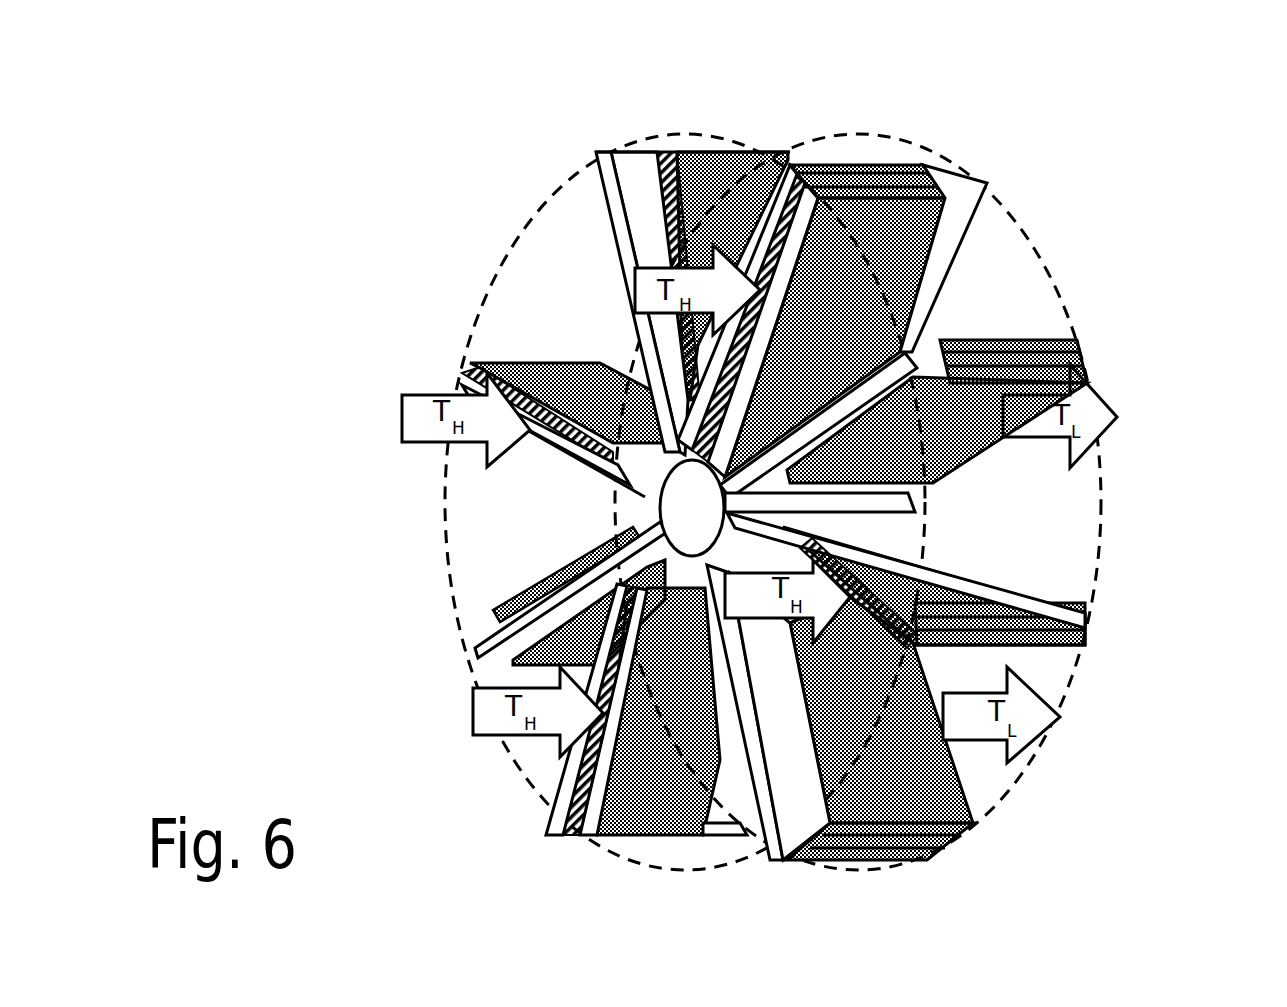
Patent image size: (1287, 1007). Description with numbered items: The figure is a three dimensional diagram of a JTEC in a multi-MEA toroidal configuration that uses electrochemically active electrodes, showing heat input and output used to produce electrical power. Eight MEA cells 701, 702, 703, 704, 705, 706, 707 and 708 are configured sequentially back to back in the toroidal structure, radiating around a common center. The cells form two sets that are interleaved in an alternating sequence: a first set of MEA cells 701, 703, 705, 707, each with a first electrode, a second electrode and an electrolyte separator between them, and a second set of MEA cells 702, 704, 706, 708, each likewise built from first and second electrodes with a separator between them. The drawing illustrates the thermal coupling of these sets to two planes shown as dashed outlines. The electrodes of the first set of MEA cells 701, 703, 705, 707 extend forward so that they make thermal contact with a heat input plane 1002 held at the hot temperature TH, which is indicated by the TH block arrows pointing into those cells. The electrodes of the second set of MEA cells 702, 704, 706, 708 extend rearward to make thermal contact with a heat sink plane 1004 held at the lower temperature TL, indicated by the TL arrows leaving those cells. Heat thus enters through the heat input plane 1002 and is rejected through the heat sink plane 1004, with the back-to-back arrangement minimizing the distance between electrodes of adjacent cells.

The MEA cell 701 is at (893, 163).
The MEA cell 702 is at (1090, 347).
The MEA cell 703 is at (1095, 647).
The MEA cell 704 is at (912, 876).
The MEA cell 705 is at (568, 835).
The MEA cell 706 is at (457, 655).
The MEA cell 707 is at (455, 380).
The MEA cell 708 is at (650, 143).
The heat input plane 1002 is at (507, 252).
The heat sink plane 1004 is at (1055, 281).